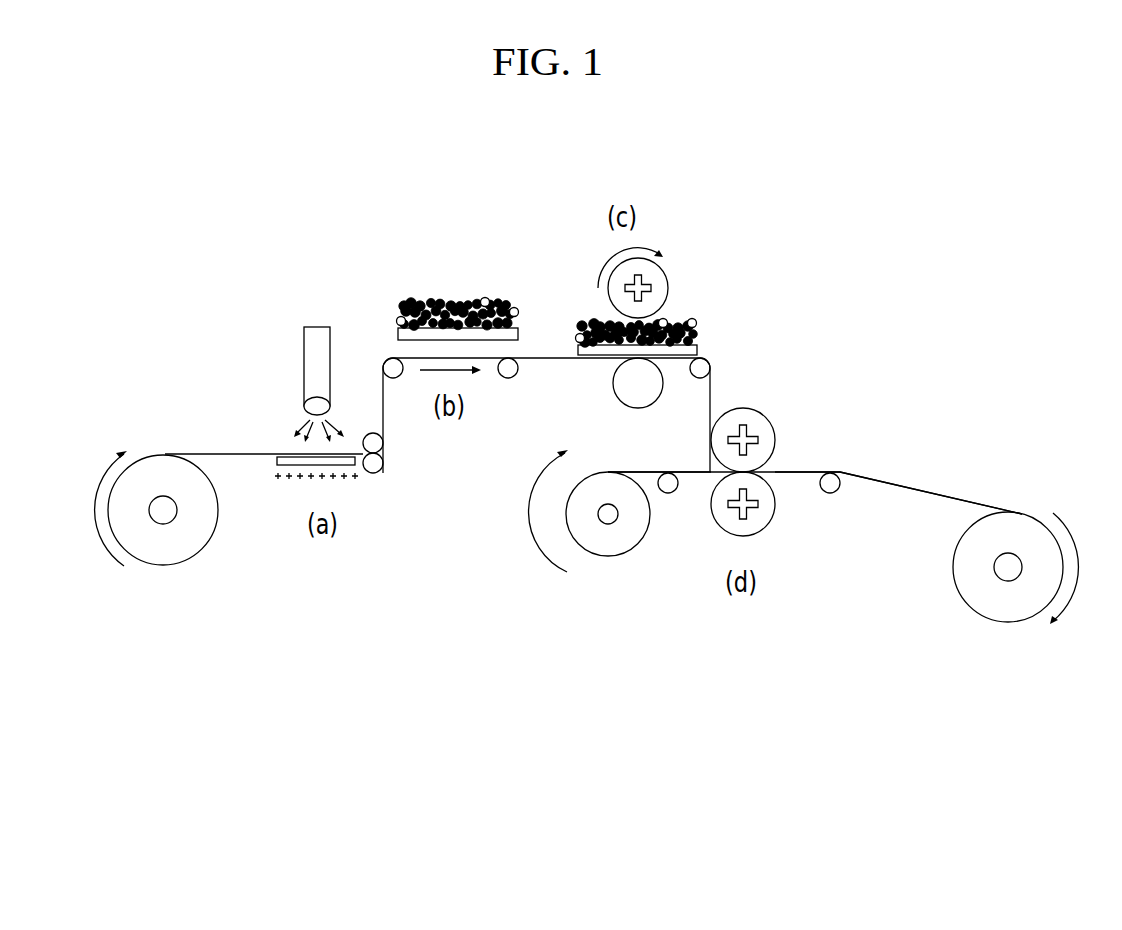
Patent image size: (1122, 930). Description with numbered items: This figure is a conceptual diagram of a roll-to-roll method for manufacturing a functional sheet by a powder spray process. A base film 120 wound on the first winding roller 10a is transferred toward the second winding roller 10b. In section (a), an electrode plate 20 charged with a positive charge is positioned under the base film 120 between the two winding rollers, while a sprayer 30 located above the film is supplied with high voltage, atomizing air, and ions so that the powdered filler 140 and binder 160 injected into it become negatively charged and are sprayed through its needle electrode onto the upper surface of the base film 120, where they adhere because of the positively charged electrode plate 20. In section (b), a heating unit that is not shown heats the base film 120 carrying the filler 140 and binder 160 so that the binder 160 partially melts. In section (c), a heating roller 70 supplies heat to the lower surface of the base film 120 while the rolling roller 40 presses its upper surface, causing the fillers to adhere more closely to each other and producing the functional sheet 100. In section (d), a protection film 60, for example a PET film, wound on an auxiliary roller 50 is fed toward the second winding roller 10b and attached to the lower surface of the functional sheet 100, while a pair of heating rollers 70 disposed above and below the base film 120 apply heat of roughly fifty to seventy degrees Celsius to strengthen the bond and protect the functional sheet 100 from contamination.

The first winding roller 10a is at (167, 566).
The second winding roller 10b is at (1012, 623).
The electrode plate 20 is at (277, 464).
The sprayer 30 is at (304, 329).
The rolling roller 40 is at (667, 283).
The auxiliary roller 50 is at (608, 556).
The protection film 60 is at (633, 471).
The heating roller 70 is at (613, 383).
The functional sheet 100 is at (923, 491).
The base film 120 is at (213, 454).
The filler 140 is at (403, 300).
The binder 160 is at (482, 300).